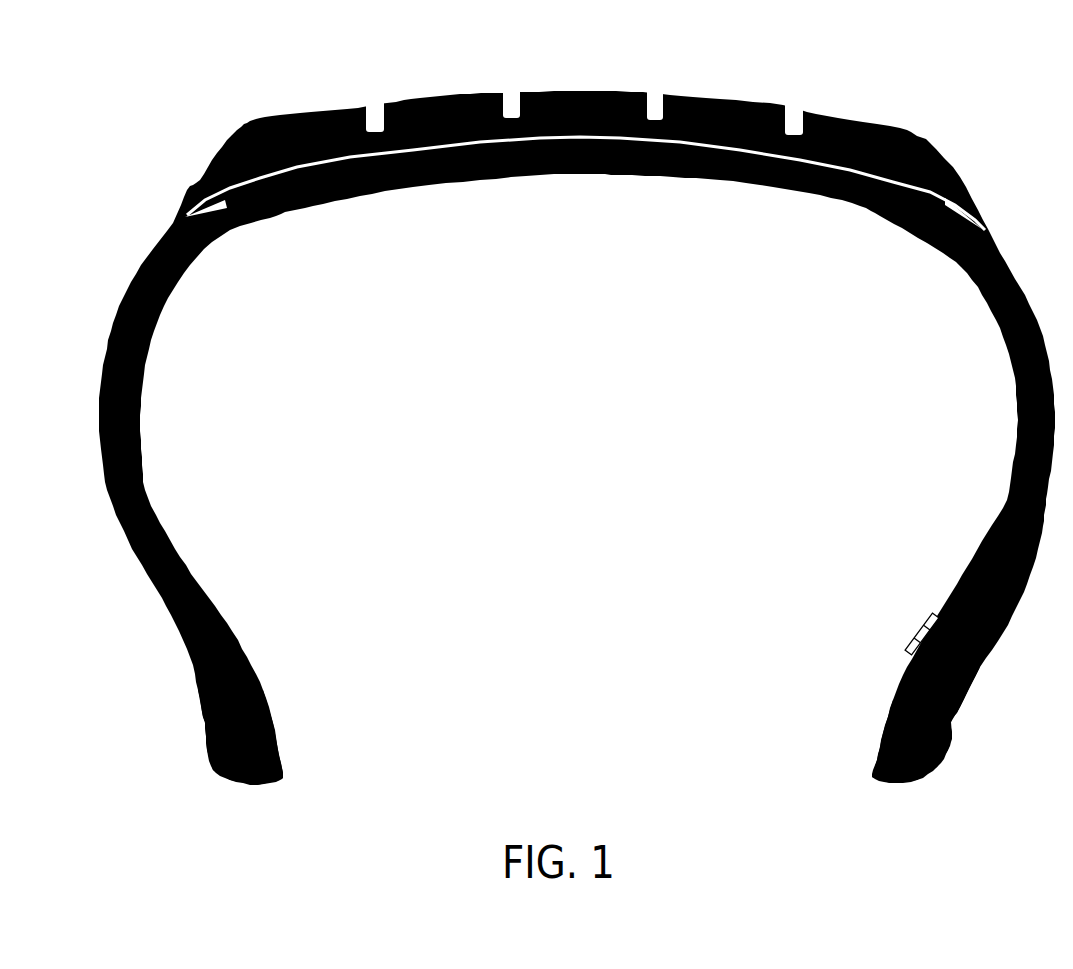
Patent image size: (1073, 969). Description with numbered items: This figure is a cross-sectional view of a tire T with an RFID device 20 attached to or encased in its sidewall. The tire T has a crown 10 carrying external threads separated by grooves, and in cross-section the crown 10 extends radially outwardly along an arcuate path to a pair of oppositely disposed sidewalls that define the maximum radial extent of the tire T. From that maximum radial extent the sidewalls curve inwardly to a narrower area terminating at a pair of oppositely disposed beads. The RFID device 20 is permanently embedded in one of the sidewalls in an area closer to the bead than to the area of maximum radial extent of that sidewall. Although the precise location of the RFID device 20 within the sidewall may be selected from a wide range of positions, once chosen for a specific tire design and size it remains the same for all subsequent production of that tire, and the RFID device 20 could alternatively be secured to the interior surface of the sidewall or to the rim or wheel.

The tire T is at (990, 193).
The crown 10 is at (587, 176).
The RFID device 20 is at (918, 633).